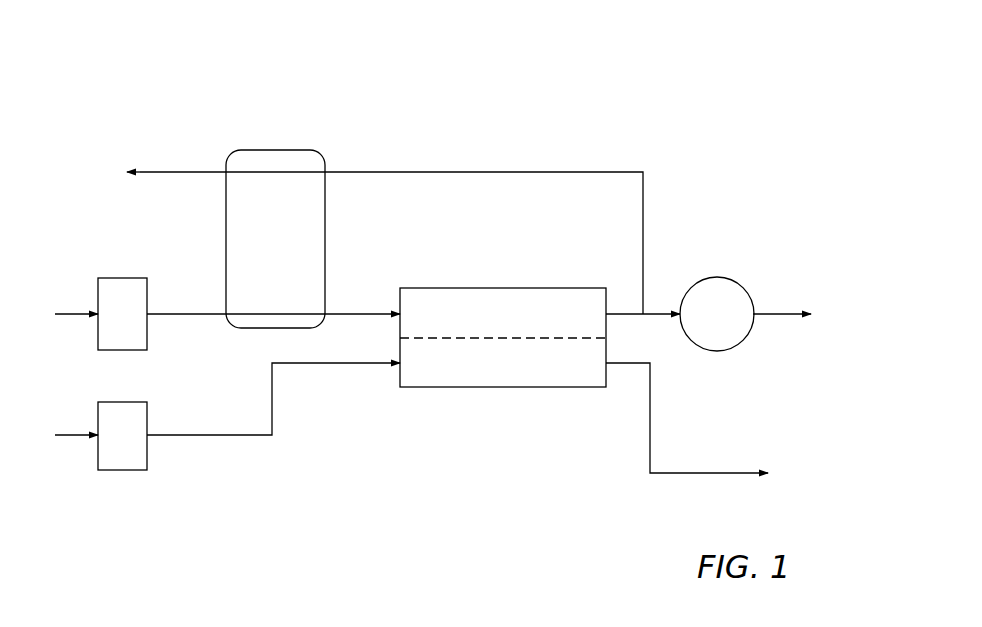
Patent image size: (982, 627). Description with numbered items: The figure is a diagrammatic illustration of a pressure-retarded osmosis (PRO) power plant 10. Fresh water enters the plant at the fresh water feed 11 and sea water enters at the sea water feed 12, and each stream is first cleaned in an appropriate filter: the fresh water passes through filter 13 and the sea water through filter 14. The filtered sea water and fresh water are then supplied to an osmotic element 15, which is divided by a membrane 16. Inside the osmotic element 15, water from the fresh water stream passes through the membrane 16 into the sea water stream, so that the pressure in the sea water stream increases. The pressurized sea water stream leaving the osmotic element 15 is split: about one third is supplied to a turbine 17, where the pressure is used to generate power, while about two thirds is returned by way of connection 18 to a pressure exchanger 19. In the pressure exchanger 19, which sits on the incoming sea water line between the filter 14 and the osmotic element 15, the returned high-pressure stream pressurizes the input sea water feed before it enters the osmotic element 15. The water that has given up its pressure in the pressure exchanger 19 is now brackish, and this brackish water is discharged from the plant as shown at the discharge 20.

The PRO power plant 10 is at (433, 325).
The fresh water feed 11 is at (73, 441).
The sea water feed 12 is at (80, 311).
The filter 13 is at (134, 470).
The filter 14 is at (128, 278).
The osmotic element 15 is at (418, 387).
The membrane 16 is at (543, 338).
The turbine 17 is at (716, 277).
The connection 18 is at (472, 172).
The pressure exchanger 19 is at (320, 152).
The brackish water discharge 20 is at (185, 171).